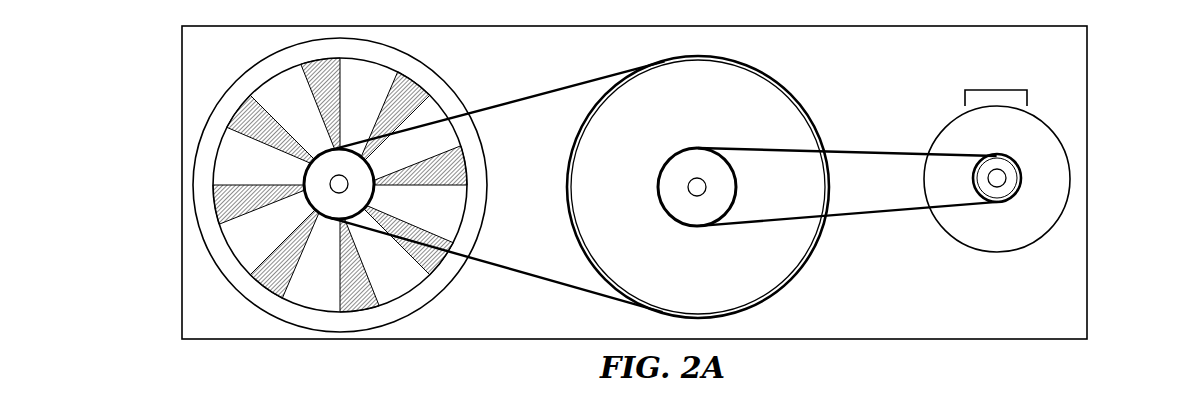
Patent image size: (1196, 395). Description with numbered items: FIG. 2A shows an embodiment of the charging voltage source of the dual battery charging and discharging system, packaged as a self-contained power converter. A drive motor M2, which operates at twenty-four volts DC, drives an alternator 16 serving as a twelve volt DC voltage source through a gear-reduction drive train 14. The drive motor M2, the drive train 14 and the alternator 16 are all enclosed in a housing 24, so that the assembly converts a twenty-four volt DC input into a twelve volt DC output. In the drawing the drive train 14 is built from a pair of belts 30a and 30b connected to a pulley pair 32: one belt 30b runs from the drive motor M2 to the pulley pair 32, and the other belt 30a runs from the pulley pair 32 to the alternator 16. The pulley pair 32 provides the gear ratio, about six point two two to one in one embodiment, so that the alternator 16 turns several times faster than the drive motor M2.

The gear-reduction drive train 14 is at (664, 216).
The alternator 16 is at (207, 118).
The housing 24 is at (1082, 217).
The belt 30a is at (527, 88).
The belt 30b is at (843, 148).
The pulley pair 32 is at (758, 108).
The drive motor M2 is at (1057, 168).